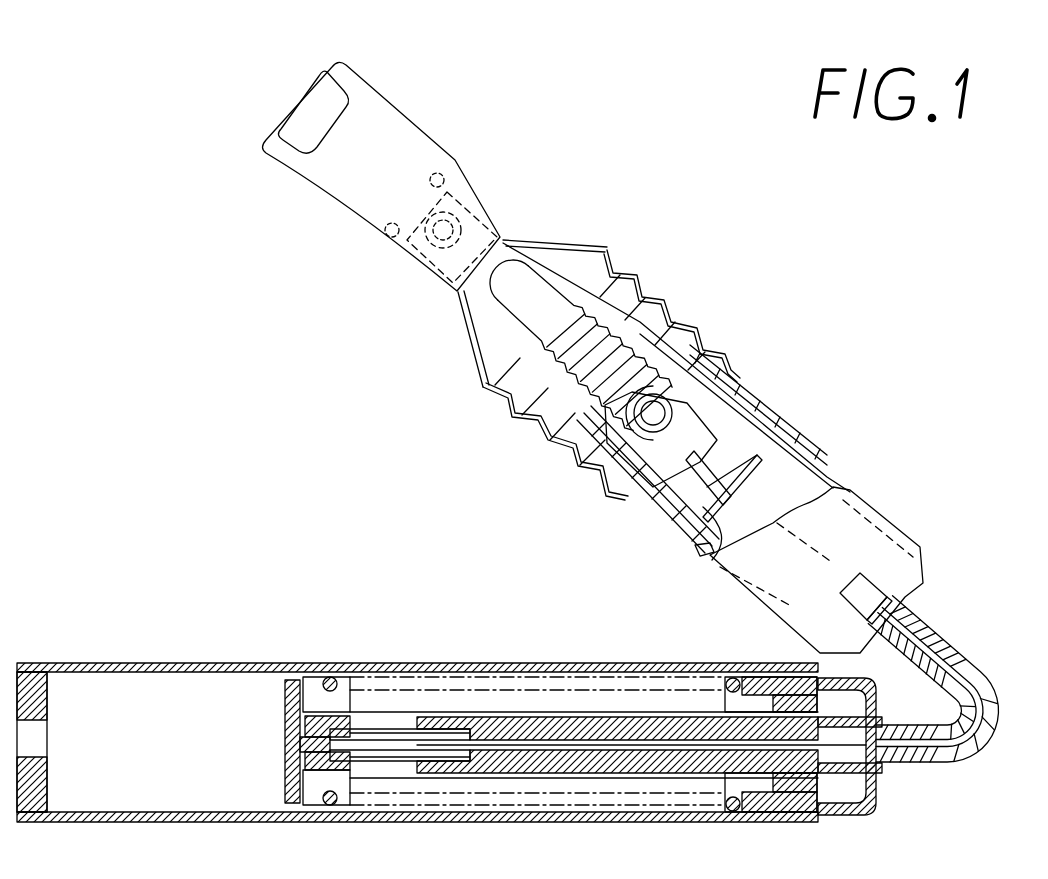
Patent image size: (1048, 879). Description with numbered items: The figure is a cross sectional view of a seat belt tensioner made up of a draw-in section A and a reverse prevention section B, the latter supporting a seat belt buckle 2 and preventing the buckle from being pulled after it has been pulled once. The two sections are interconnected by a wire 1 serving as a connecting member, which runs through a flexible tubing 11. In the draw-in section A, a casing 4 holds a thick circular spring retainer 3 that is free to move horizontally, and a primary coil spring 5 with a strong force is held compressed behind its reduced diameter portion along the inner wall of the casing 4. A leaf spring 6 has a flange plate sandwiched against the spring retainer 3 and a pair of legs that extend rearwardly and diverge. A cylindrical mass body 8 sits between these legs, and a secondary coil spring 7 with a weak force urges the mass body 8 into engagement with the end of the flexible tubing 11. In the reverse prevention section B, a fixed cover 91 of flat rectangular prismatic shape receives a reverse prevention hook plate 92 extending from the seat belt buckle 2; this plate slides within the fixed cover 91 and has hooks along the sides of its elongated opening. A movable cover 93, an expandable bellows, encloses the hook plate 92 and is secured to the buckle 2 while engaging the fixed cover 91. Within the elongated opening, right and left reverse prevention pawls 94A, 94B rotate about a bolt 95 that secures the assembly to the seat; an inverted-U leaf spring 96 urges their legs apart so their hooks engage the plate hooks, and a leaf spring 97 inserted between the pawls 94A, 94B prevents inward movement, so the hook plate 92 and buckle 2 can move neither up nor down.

The wire 1 is at (730, 543).
The seat belt buckle 2 is at (398, 118).
The spring retainer 3 is at (312, 688).
The casing 4 is at (393, 665).
The primary coil spring 5 is at (330, 678).
The leaf spring 6 is at (550, 712).
The secondary coil spring 7 is at (357, 730).
The mass body 8 is at (600, 727).
The flexible tubing 11 is at (953, 643).
The fixed cover 91 is at (822, 467).
The reverse prevention hook plate 92 is at (583, 300).
The movable cover 93 is at (652, 275).
The reverse prevention pawl 94A is at (717, 345).
The reverse prevention pawl 94B is at (637, 497).
The bolt 95 is at (585, 465).
The leaf spring 96 is at (565, 440).
The leaf spring 97 is at (710, 553).
The draw-in section A is at (447, 650).
The reverse prevention section B is at (765, 388).